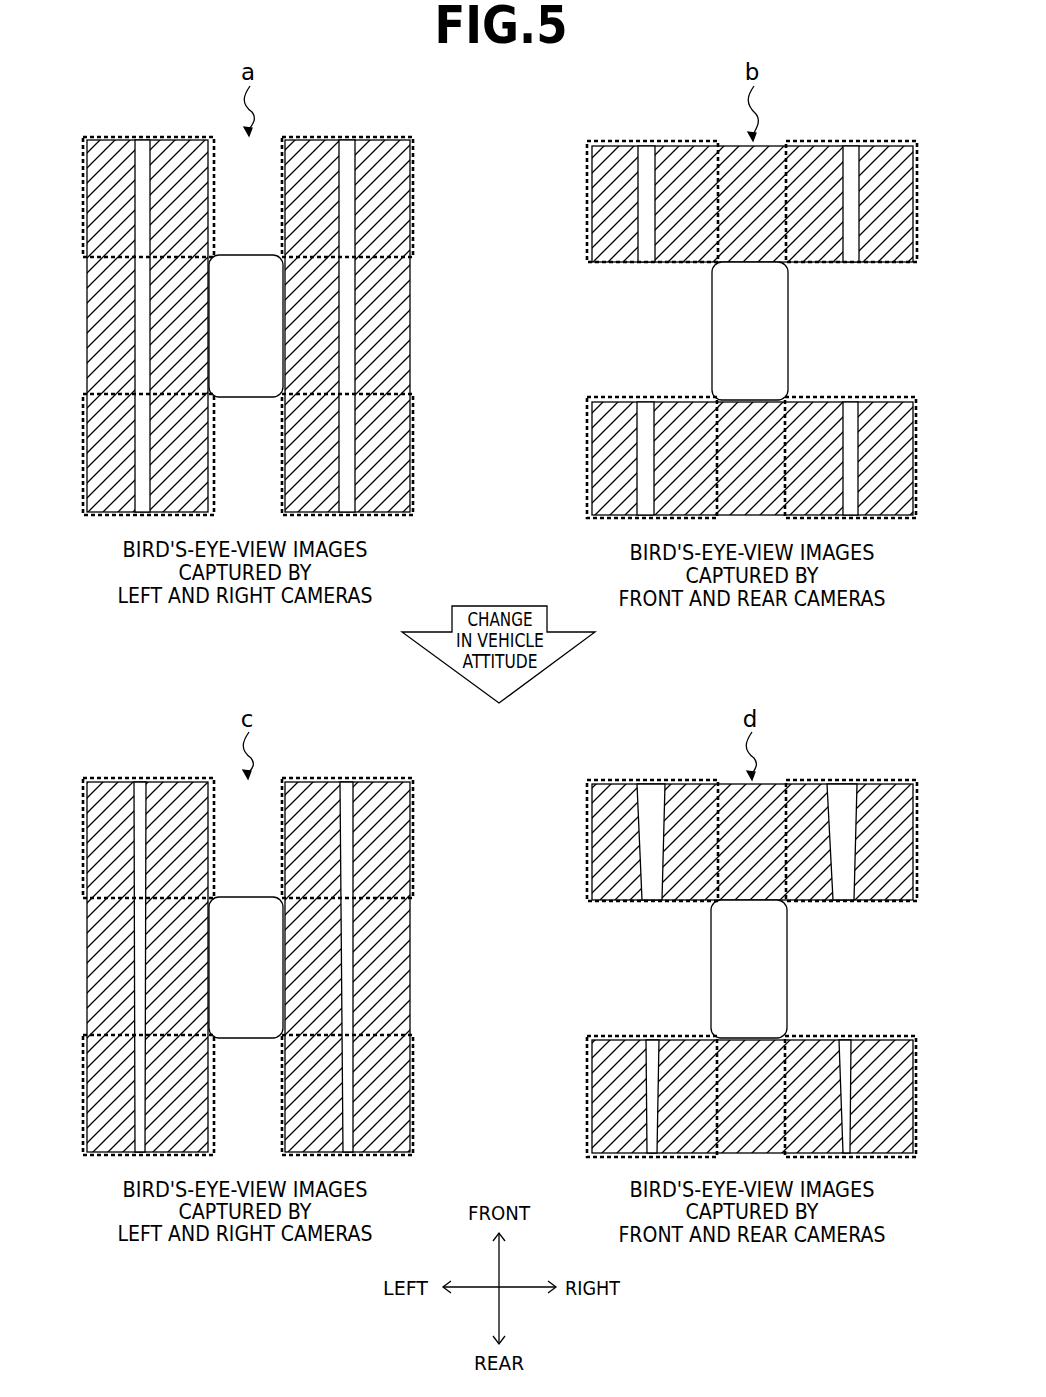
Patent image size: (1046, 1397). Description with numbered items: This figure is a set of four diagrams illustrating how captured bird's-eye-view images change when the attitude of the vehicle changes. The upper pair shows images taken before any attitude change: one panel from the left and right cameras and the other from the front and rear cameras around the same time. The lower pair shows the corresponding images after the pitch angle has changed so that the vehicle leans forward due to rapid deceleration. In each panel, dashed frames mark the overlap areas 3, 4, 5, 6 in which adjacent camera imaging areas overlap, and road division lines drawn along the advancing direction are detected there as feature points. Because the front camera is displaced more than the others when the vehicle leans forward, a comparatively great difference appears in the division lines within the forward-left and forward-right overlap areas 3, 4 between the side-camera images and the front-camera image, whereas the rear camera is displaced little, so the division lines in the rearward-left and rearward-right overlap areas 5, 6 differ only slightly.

The overlap area 3 is at (95, 130).
The overlap area 4 is at (402, 130).
The overlap area 5 is at (95, 523).
The overlap area 6 is at (402, 523).